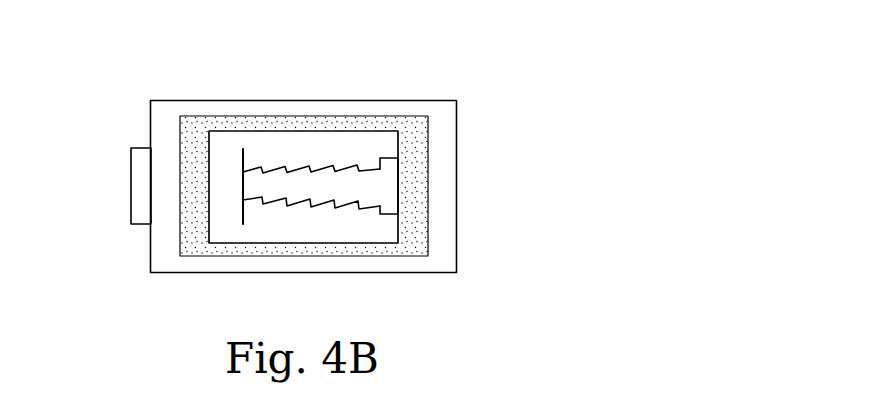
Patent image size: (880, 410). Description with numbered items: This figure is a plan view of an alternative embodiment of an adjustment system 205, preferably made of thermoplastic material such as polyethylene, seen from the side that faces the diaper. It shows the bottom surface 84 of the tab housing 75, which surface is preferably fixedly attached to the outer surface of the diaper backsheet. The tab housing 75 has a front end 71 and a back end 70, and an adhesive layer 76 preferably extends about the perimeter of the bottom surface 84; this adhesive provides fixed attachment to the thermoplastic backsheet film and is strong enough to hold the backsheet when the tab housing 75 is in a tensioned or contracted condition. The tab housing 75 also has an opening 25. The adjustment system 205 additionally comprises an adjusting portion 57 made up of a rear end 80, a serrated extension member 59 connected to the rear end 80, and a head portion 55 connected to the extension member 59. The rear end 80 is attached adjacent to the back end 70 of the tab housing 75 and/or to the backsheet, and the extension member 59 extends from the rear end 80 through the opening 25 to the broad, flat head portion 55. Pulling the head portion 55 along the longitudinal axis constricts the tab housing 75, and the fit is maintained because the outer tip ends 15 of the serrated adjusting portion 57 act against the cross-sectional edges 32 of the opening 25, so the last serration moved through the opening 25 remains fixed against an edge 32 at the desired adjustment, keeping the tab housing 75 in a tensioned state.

The adjustment system 205 is at (303, 171).
The back end 70 is at (293, 187).
The front end 71 is at (148, 118).
The tab housing 75 is at (442, 175).
The adhesive layer 76 is at (243, 252).
The bottom surface 84 is at (370, 237).
The head portion 55 is at (130, 182).
The opening 25 is at (151, 137).
The cross-sectional edge 32 is at (242, 150).
The outer tip ends 15 is at (378, 184).
The adjusting portion 57 is at (273, 187).
The serrated extension member 59 is at (345, 164).
The rear end 80 is at (390, 163).